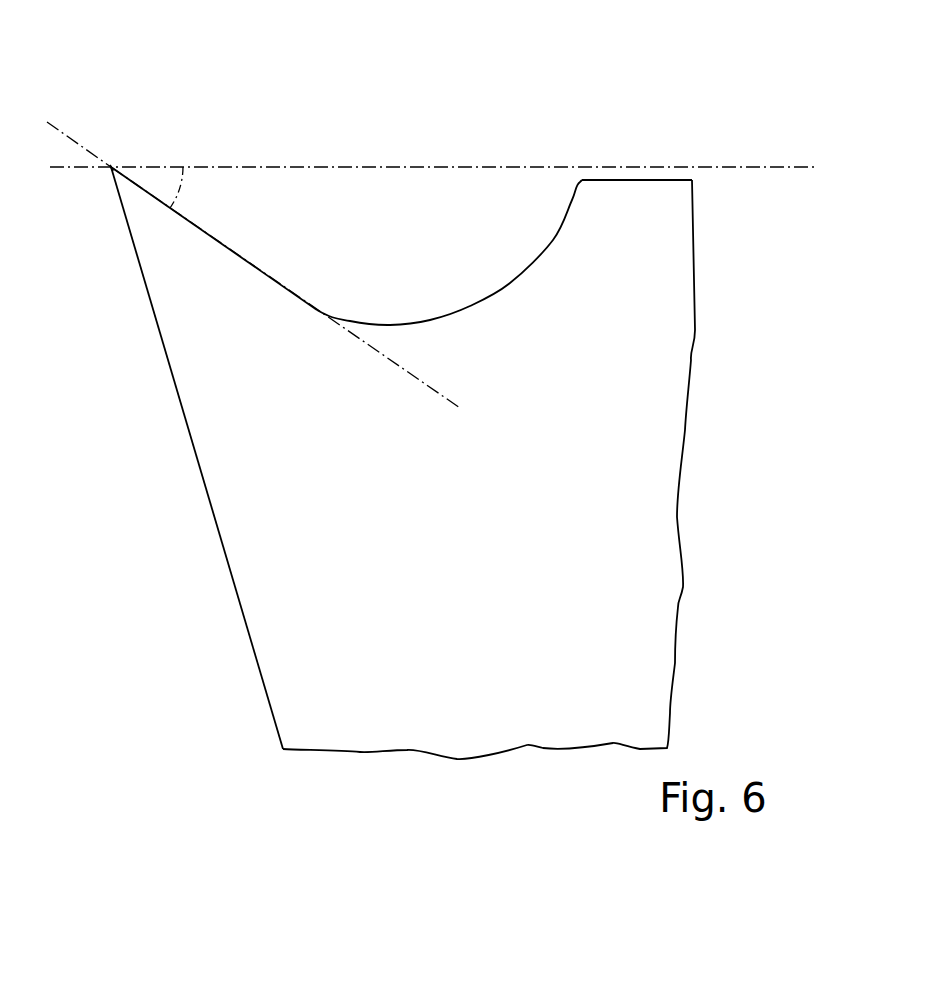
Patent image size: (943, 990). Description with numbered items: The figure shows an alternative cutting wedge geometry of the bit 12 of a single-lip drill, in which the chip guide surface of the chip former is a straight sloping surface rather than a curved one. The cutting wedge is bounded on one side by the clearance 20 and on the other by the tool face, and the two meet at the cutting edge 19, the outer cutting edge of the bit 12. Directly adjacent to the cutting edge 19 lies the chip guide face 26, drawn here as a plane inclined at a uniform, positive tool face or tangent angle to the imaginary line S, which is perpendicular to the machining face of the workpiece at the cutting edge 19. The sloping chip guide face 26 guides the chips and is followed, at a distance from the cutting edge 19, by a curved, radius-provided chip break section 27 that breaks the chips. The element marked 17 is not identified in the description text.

The bit 12 is at (727, 120).
The top face 17 is at (653, 180).
The cutting edge 19 is at (112, 164).
The clearance 20 is at (197, 462).
The chip guide face 26 is at (280, 265).
The chip break section 27 is at (485, 263).
The imaginary line S is at (763, 168).